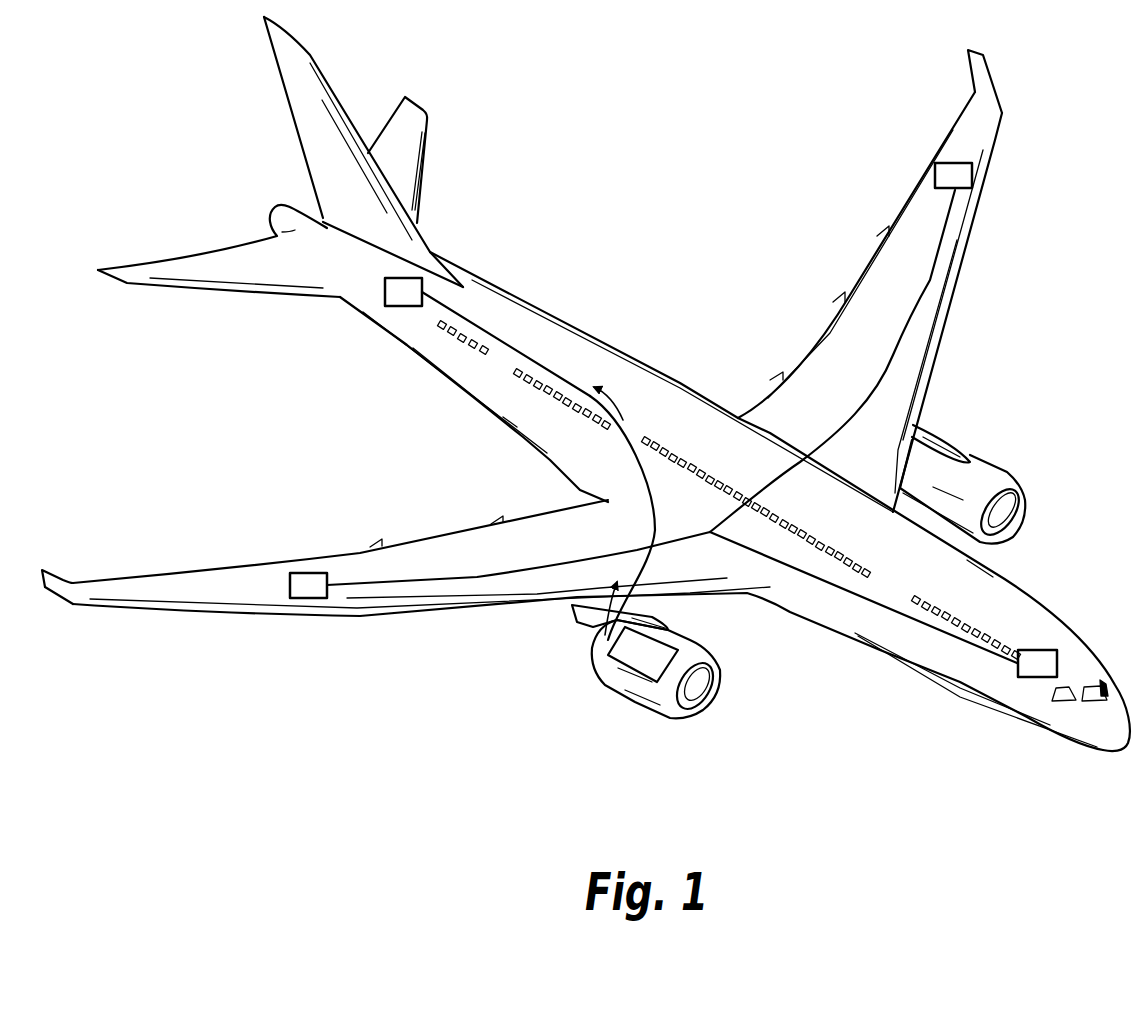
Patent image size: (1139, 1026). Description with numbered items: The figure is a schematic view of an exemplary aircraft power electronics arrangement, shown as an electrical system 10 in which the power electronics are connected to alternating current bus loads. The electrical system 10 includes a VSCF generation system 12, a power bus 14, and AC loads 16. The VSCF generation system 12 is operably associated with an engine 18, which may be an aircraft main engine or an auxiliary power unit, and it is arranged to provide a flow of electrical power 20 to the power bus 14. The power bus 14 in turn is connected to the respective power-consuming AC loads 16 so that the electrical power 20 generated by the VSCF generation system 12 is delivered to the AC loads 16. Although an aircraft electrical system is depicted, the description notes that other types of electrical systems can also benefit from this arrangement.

The electrical system 10 is at (432, 731).
The VSCF generation system 12 is at (652, 667).
The power bus 14 is at (540, 360).
The AC loads 16 is at (404, 288).
The engine 18 is at (610, 680).
The electrical power 20 is at (610, 403).